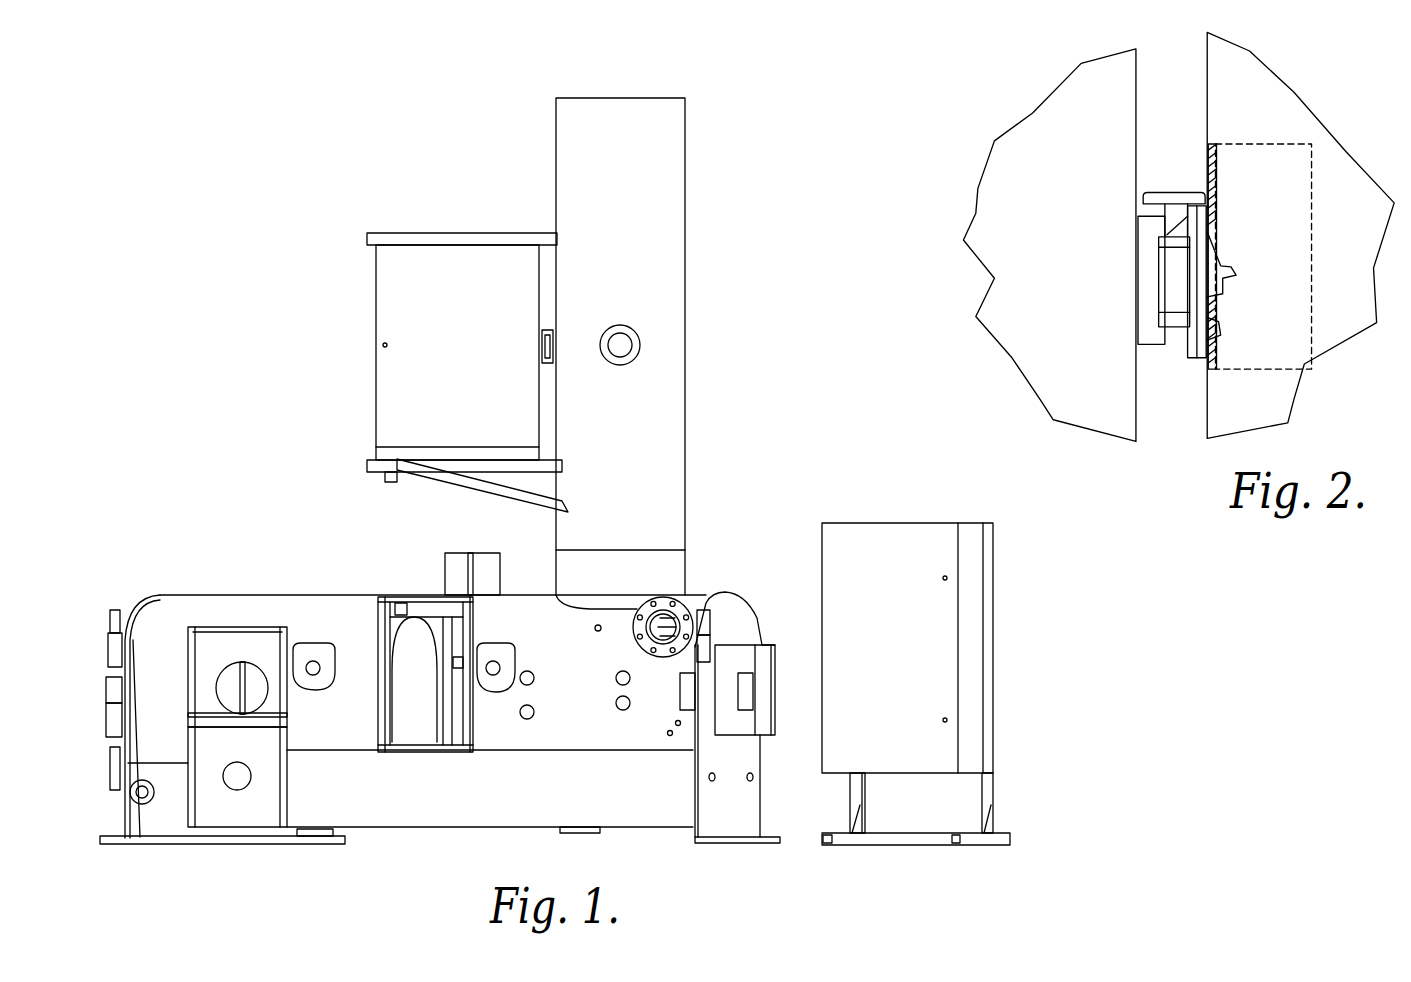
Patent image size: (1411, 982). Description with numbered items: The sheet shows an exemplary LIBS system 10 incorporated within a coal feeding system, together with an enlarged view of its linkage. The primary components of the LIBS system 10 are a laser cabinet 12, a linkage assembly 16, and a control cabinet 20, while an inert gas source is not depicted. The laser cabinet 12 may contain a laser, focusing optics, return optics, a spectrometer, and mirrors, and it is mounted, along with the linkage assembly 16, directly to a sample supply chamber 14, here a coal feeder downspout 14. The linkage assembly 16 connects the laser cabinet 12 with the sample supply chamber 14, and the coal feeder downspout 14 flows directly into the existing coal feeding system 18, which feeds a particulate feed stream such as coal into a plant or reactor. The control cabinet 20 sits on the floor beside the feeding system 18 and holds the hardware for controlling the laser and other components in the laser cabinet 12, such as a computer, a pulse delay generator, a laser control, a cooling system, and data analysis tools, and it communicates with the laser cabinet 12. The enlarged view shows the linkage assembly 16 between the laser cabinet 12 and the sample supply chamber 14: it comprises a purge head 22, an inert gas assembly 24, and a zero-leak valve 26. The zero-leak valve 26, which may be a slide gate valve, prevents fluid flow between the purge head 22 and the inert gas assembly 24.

In FIG. 1, the LIBS system 10 is at (690, 80).
In FIG. 1, the laser cabinet 12 is at (402, 238).
In FIG. 2, the laser cabinet 12 is at (1067, 75).
In FIG. 1, the sample supply chamber 14 is at (685, 112).
In FIG. 2, the sample supply chamber 14 is at (1257, 87).
In FIG. 1, the linkage assembly 16 is at (552, 327).
In FIG. 2, the linkage assembly 16 is at (1167, 187).
In FIG. 1, the coal feeding system 18 is at (720, 593).
In FIG. 1, the control cabinet 20 is at (857, 527).
In FIG. 2, the purge head 22 is at (1180, 353).
In FIG. 2, the inert gas assembly 24 is at (1142, 333).
In FIG. 2, the zero-leak valve 26 is at (1168, 317).